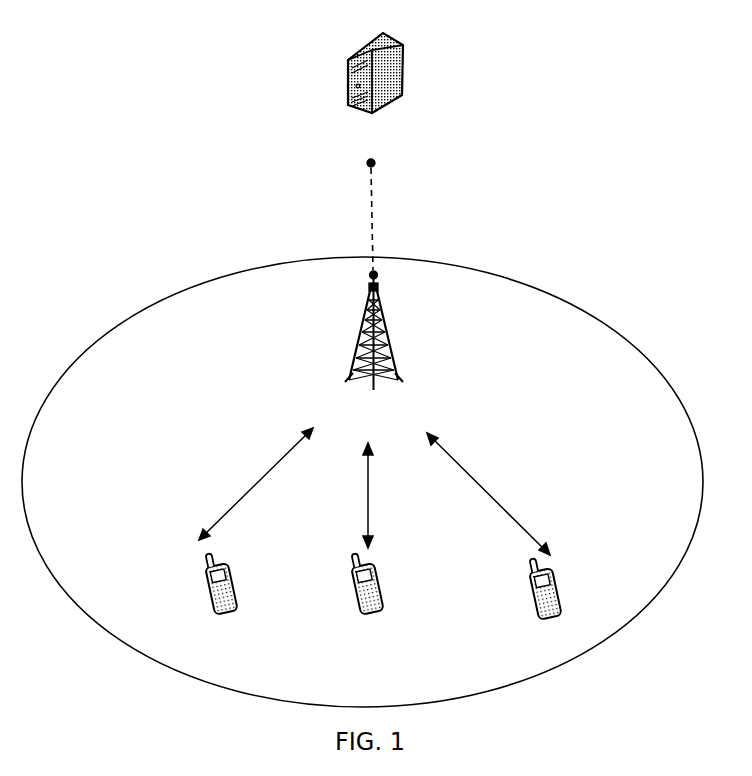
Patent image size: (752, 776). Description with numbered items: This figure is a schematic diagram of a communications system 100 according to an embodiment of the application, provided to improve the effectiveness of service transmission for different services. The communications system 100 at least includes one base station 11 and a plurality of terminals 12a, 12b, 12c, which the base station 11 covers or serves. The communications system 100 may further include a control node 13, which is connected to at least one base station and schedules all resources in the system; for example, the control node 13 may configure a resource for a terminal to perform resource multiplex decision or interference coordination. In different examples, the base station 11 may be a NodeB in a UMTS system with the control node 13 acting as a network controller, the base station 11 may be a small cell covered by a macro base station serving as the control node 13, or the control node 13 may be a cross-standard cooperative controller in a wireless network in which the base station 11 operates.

The communications system 100 is at (535, 135).
The control node 13 is at (375, 88).
The base station 11 is at (374, 350).
The terminal 12a is at (221, 598).
The terminal 12b is at (367, 598).
The terminal 12c is at (545, 602).